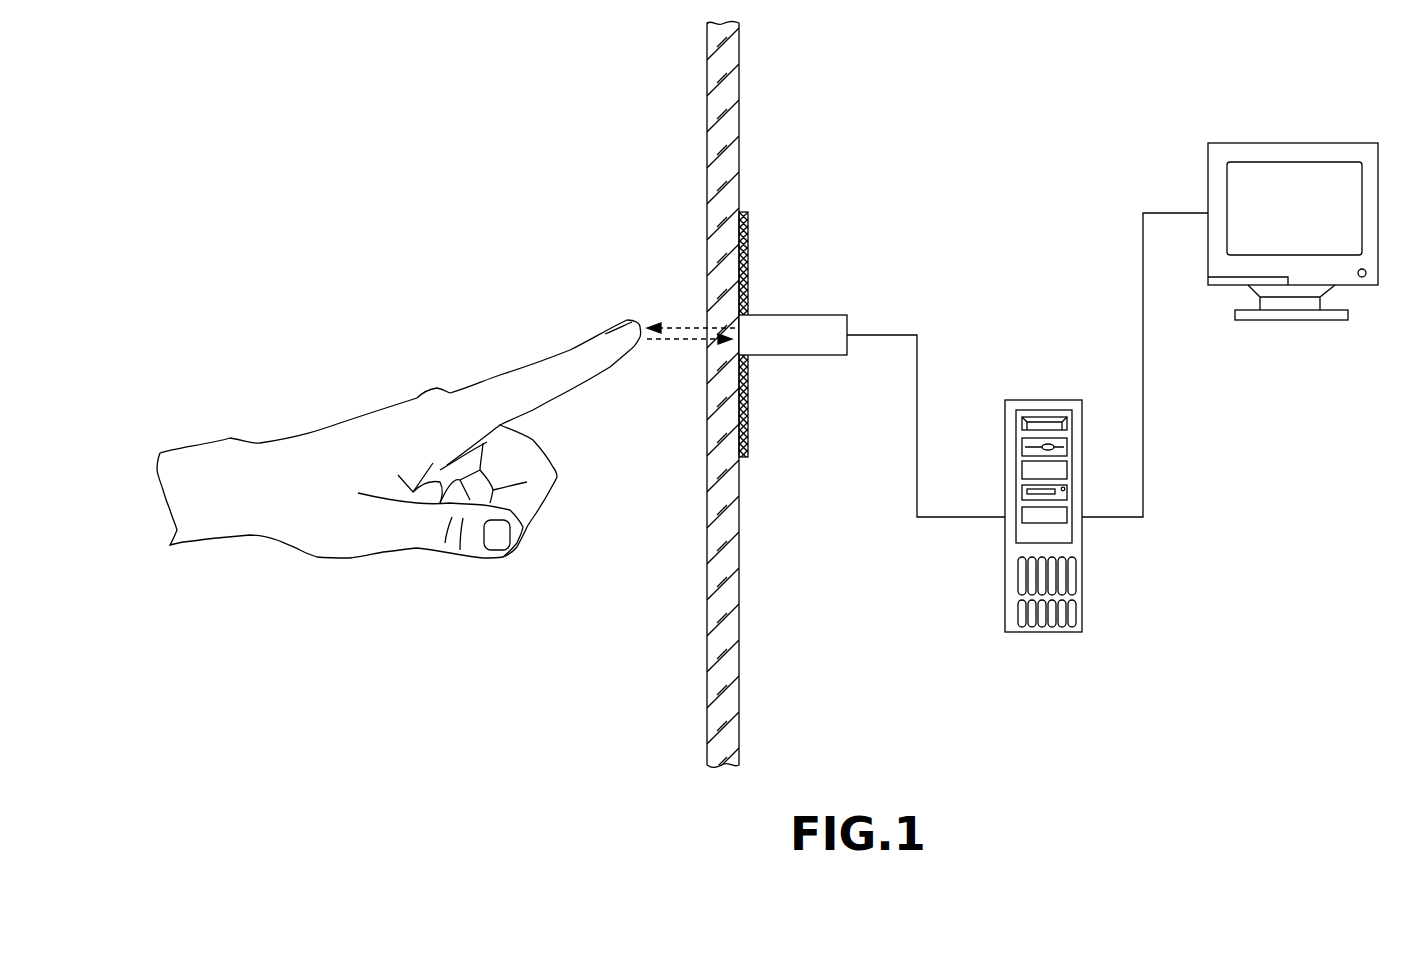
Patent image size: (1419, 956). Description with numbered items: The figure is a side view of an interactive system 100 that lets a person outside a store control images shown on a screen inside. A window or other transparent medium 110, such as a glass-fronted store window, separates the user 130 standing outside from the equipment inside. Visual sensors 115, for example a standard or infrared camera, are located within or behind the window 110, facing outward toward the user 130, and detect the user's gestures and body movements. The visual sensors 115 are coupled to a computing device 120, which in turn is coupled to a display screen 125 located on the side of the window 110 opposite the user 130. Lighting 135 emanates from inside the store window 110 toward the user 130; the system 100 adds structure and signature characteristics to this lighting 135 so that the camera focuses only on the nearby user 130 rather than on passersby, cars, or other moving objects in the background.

The interactive system 100 is at (1043, 68).
The window or other transparent medium 110 is at (739, 82).
The visual sensors 115 is at (748, 312).
The computing device 120 is at (1027, 400).
The display screen 125 is at (1208, 160).
The user 130 is at (545, 355).
The lighting 135 is at (686, 326).